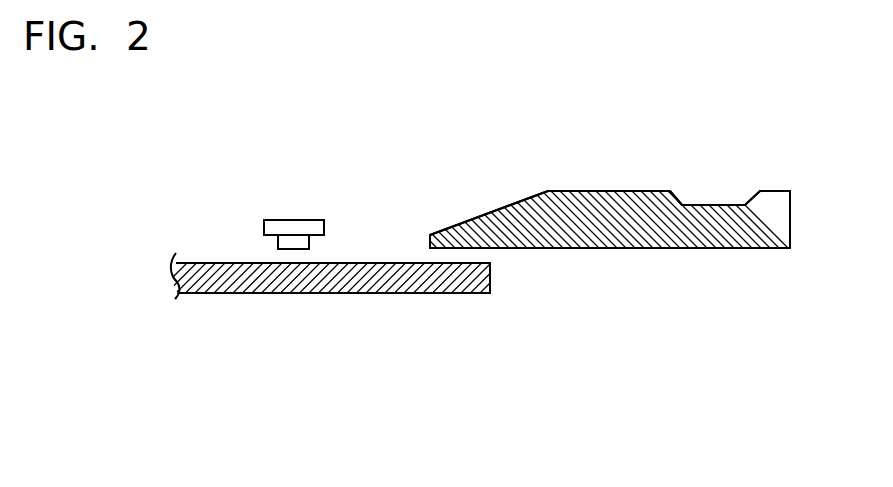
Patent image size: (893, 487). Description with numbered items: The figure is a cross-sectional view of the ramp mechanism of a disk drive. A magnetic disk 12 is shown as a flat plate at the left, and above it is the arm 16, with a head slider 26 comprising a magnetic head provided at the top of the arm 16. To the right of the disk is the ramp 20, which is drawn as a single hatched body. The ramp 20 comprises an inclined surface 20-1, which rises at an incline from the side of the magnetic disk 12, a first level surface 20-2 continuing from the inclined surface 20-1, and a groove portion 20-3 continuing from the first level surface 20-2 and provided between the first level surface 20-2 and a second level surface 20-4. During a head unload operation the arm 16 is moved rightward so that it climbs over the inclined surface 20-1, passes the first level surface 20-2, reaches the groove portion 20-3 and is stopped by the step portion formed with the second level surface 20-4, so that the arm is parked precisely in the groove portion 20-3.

The magnetic disk 12 is at (295, 295).
The arm 16 is at (296, 220).
The head slider 26 is at (310, 247).
The ramp 20 is at (638, 248).
The inclined surface 20-1 is at (482, 217).
The first level surface 20-2 is at (613, 191).
The groove portion 20-3 is at (717, 205).
The second level surface 20-4 is at (775, 191).